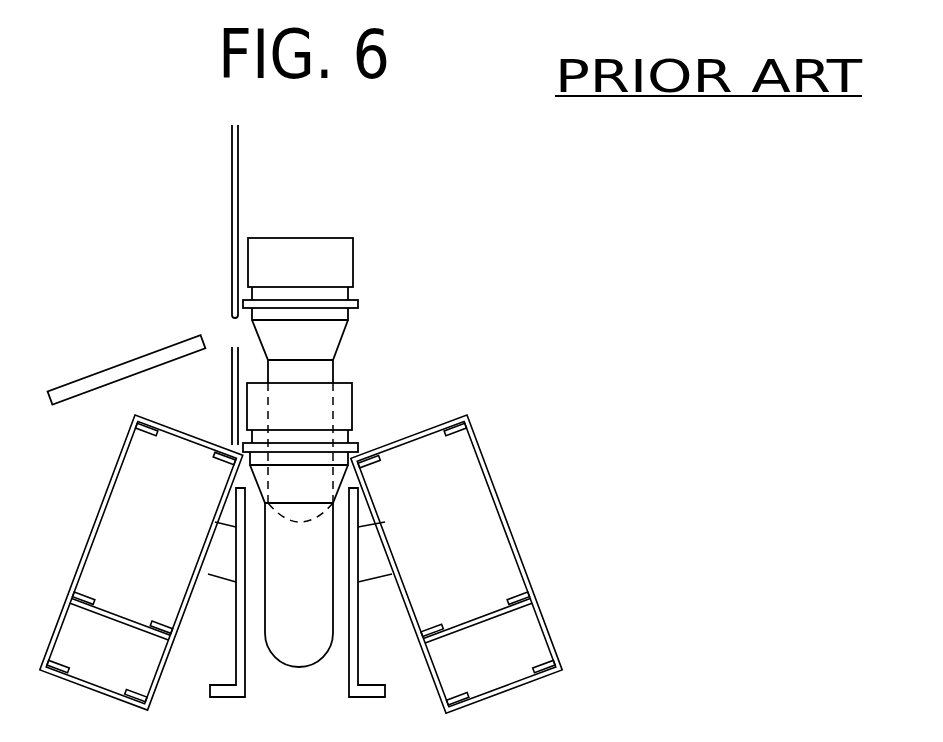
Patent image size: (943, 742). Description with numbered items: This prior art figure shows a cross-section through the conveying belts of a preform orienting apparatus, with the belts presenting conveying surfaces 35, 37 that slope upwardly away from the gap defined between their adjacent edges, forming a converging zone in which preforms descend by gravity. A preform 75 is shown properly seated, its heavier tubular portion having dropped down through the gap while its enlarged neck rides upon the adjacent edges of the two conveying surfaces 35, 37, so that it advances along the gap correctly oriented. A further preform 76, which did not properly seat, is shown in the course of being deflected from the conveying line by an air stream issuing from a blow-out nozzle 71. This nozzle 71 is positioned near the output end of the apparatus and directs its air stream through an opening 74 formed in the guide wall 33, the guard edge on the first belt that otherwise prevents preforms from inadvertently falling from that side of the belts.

The guide wall 33 is at (232, 173).
The conveying surface 35 is at (125, 445).
The conveying surface 37 is at (437, 420).
The blow-out nozzle 71 is at (125, 360).
The opening 74 is at (230, 333).
The preform 75 is at (353, 388).
The preform 76 is at (353, 248).